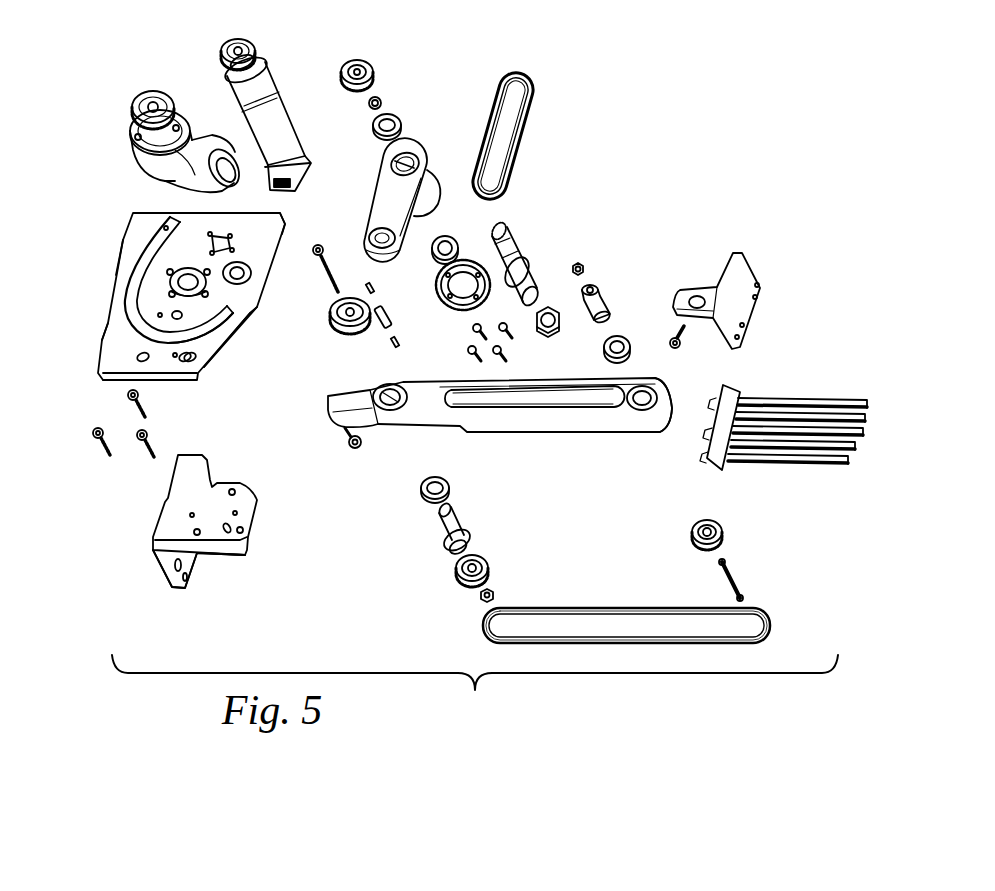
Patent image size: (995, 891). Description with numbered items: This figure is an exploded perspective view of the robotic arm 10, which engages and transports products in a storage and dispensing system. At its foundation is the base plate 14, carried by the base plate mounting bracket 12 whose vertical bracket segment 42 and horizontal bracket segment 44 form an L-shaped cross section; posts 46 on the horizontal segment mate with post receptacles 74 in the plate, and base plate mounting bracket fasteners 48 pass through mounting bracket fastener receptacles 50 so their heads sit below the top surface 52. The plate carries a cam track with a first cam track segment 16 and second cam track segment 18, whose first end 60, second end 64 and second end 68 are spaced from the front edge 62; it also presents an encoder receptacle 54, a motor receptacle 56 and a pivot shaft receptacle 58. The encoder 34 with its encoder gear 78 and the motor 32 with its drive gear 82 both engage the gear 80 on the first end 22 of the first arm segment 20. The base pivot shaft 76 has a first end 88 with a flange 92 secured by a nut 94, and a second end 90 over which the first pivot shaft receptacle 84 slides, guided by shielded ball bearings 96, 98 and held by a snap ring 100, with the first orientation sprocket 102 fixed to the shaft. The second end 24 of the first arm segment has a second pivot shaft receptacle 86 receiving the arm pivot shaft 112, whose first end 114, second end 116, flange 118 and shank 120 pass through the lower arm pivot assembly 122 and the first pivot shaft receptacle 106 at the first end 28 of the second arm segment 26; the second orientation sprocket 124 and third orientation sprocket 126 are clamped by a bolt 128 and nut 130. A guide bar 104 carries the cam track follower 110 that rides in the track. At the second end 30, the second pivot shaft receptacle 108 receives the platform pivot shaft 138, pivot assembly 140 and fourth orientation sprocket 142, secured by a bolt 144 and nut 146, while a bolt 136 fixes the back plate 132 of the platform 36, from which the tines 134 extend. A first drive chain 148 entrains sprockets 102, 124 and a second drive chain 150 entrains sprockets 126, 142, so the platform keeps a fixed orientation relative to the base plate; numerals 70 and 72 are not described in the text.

The robotic arm 10 is at (788, 72).
The base plate mounting bracket 12 is at (136, 530).
The base plate 14 is at (114, 218).
The first cam track segment 16 is at (104, 283).
The second cam track segment 18 is at (226, 362).
The first arm segment 20 is at (449, 137).
The first end 22 is at (438, 188).
The second end 24 is at (385, 258).
The second arm segment 26 is at (556, 462).
The first end 28 is at (328, 404).
The second end 30 is at (665, 417).
The motor 32 is at (299, 82).
The encoder 34 is at (116, 136).
The platform 36 is at (800, 376).
The vertical bracket segment 42 is at (168, 592).
The horizontal bracket segment 44 is at (232, 553).
The posts 46 is at (232, 527).
The base plate mounting bracket fasteners 48 is at (147, 450).
The mounting bracket fastener receptacles 50 is at (178, 362).
The top surface 52 is at (181, 273).
The encoder receptacle 54 is at (190, 296).
The motor receptacle 56 is at (222, 238).
The pivot shaft receptacle 58 is at (242, 275).
The first end 60 is at (170, 216).
The front edge 62 is at (118, 266).
The second end 64 is at (125, 322).
The second end 68 is at (235, 320).
The bottom edge 70 is at (118, 375).
The corner 72 is at (284, 236).
The post receptacles 74 is at (200, 376).
The base pivot shaft 76 is at (547, 231).
The encoder gear 78 is at (160, 95).
The gear 80 is at (448, 305).
The drive gear 82 is at (233, 40).
The first pivot shaft receptacle 84 is at (395, 168).
The second pivot shaft receptacle 86 is at (383, 228).
The first end 88 is at (540, 288).
The second end 90 is at (506, 230).
The flange 92 is at (528, 268).
The nut 94 is at (548, 334).
The shielded ball bearing 96 is at (396, 116).
The shielded ball bearing 98 is at (452, 238).
The snap ring 100 is at (382, 97).
The first orientation sprocket 102 is at (360, 58).
The guide bar 104 is at (355, 395).
The first pivot shaft receptacle 106 is at (390, 405).
The second pivot shaft receptacle 108 is at (634, 406).
The cam track follower 110 is at (357, 455).
The arm pivot shaft 112 is at (422, 539).
The first end 114 is at (438, 512).
The second end 116 is at (472, 540).
The flange 118 is at (450, 548).
The shank 120 is at (462, 512).
The lower arm pivot assembly 122 is at (447, 480).
The second orientation sprocket 124 is at (338, 322).
The third orientation sprocket 126 is at (490, 570).
The bolt 128 is at (331, 258).
The nut 130 is at (478, 603).
The back plate 132 is at (748, 272).
The tines 134 is at (848, 457).
The bolt 136 is at (679, 350).
The platform pivot shaft 138 is at (608, 306).
The pivot assembly 140 is at (604, 350).
The fourth orientation sprocket 142 is at (697, 552).
The bolt 144 is at (725, 558).
The nut 146 is at (583, 262).
The first drive chain 148 is at (518, 142).
The second drive chain 150 is at (662, 608).